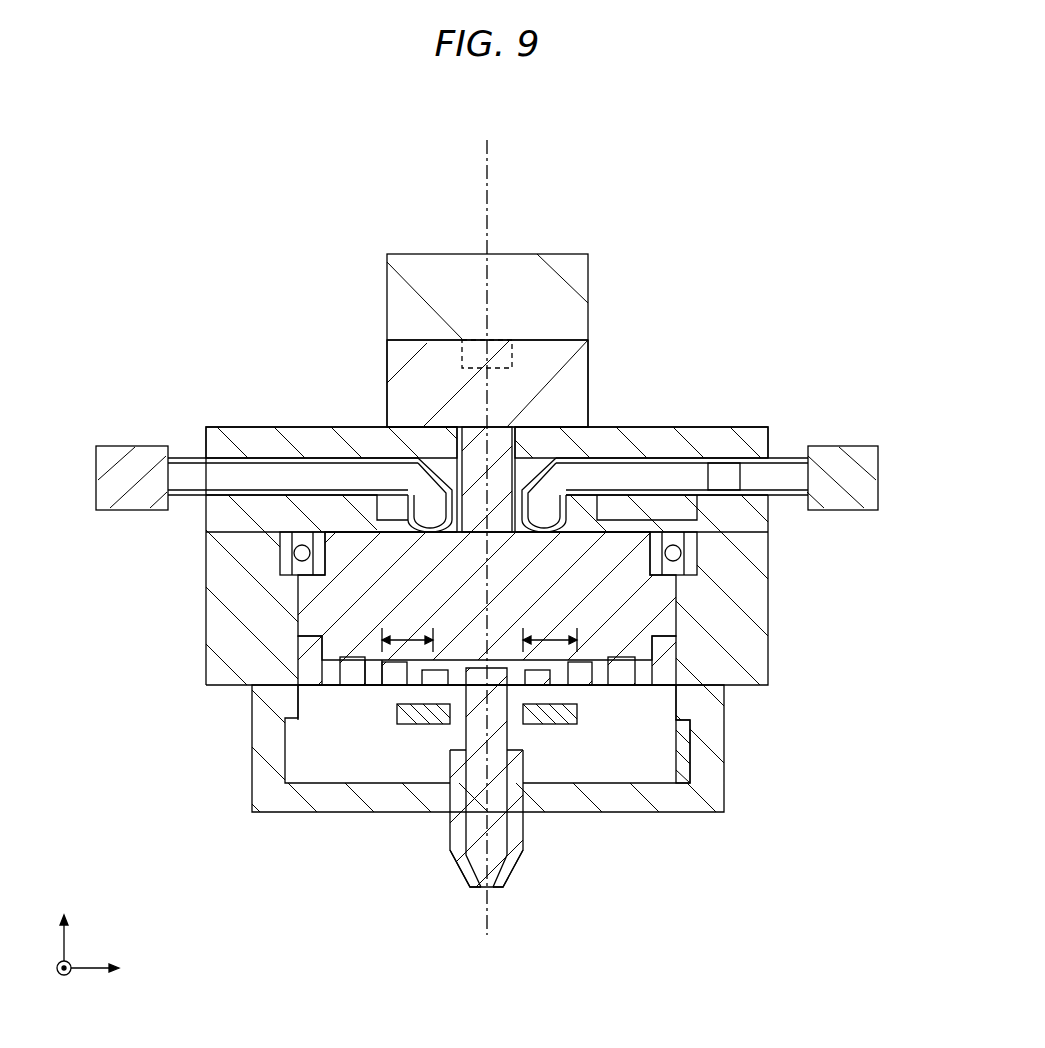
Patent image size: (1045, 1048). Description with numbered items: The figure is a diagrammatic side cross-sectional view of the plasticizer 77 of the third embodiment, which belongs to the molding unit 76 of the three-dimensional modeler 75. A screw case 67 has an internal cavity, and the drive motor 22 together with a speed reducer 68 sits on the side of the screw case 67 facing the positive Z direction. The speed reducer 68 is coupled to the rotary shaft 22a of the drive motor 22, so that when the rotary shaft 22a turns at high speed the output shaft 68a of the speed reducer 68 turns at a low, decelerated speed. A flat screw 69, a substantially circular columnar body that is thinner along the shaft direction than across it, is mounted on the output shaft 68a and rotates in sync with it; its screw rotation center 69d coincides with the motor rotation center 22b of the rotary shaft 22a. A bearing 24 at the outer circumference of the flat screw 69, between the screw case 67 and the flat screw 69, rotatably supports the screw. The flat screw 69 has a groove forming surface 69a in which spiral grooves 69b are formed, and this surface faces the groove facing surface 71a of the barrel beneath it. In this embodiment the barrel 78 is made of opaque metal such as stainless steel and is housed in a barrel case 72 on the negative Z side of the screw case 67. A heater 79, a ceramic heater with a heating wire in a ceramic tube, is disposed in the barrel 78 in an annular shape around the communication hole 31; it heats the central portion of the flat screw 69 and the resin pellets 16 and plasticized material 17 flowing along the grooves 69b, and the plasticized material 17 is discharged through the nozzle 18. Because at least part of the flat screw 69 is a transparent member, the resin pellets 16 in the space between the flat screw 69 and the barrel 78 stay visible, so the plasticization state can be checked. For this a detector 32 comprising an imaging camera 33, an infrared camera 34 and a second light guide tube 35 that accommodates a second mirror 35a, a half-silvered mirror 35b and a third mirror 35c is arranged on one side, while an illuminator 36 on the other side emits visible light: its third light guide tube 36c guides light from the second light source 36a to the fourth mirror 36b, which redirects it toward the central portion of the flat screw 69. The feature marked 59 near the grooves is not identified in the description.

The resin pellets 16 is at (683, 645).
The plasticized material 17 is at (535, 808).
The nozzle 18 is at (510, 880).
The drive motor 22 is at (487, 312).
The rotary shaft 22a is at (490, 356).
The motor rotation center 22b is at (492, 152).
The bearing 24 is at (697, 548).
The communication hole 31 is at (497, 852).
The detector 32 is at (643, 320).
The imaging camera 33 is at (865, 418).
The infrared camera 34 is at (853, 453).
The second light guide tube 35 is at (787, 456).
The second mirror 35a is at (653, 427).
The half-silvered mirror 35b is at (755, 408).
The third mirror 35c is at (725, 480).
The illuminator 36 is at (95, 318).
The second light source 36a is at (128, 446).
The fourth mirror 36b is at (266, 427).
The third light guide tube 36c is at (196, 458).
The gap 59 is at (408, 632).
The screw case 67 is at (338, 427).
The speed reducer 68 is at (522, 524).
The output shaft 68a is at (497, 445).
The flat screw 69 is at (522, 524).
The groove forming surface 69a is at (667, 703).
The spiral grooves 69b is at (607, 651).
The screw rotation center 69d is at (500, 543).
The groove facing surface 71a is at (373, 677).
The barrel case 72 is at (522, 524).
The three-dimensional modeler 75 is at (838, 119).
The molding unit 76 is at (522, 524).
The plasticizer 77 is at (522, 524).
The barrel 78 is at (683, 732).
The heater 79 is at (400, 714).